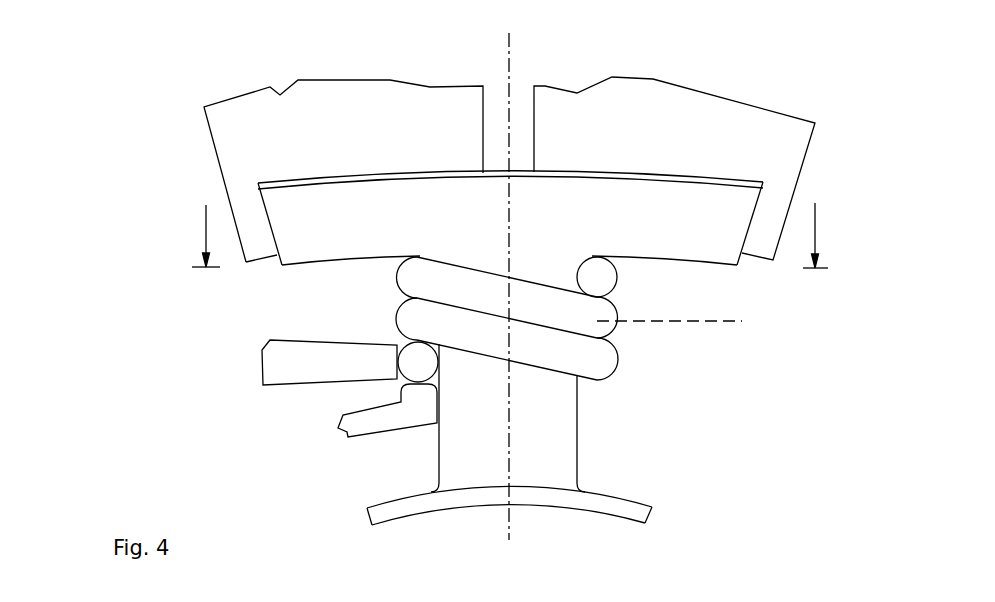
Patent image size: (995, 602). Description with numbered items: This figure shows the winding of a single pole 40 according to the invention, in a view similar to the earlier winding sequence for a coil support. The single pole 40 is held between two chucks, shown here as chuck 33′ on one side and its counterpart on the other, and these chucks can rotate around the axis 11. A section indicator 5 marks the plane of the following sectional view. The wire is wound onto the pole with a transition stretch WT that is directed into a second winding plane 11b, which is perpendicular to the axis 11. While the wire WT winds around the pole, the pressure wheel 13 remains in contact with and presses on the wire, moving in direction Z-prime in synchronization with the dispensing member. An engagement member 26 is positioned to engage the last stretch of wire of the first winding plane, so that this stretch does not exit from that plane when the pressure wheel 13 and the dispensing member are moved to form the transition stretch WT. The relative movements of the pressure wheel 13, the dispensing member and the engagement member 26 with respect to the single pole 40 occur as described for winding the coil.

The axis 11 is at (509, 57).
The second winding plane 11b is at (707, 321).
The chuck 33′ is at (230, 137).
The section line V-V 5 is at (206, 241).
The transition stretch of wire WT is at (469, 282).
The pressure wheel 13 is at (290, 370).
The engagement member 26 is at (375, 427).
The single pole 40 is at (682, 445).